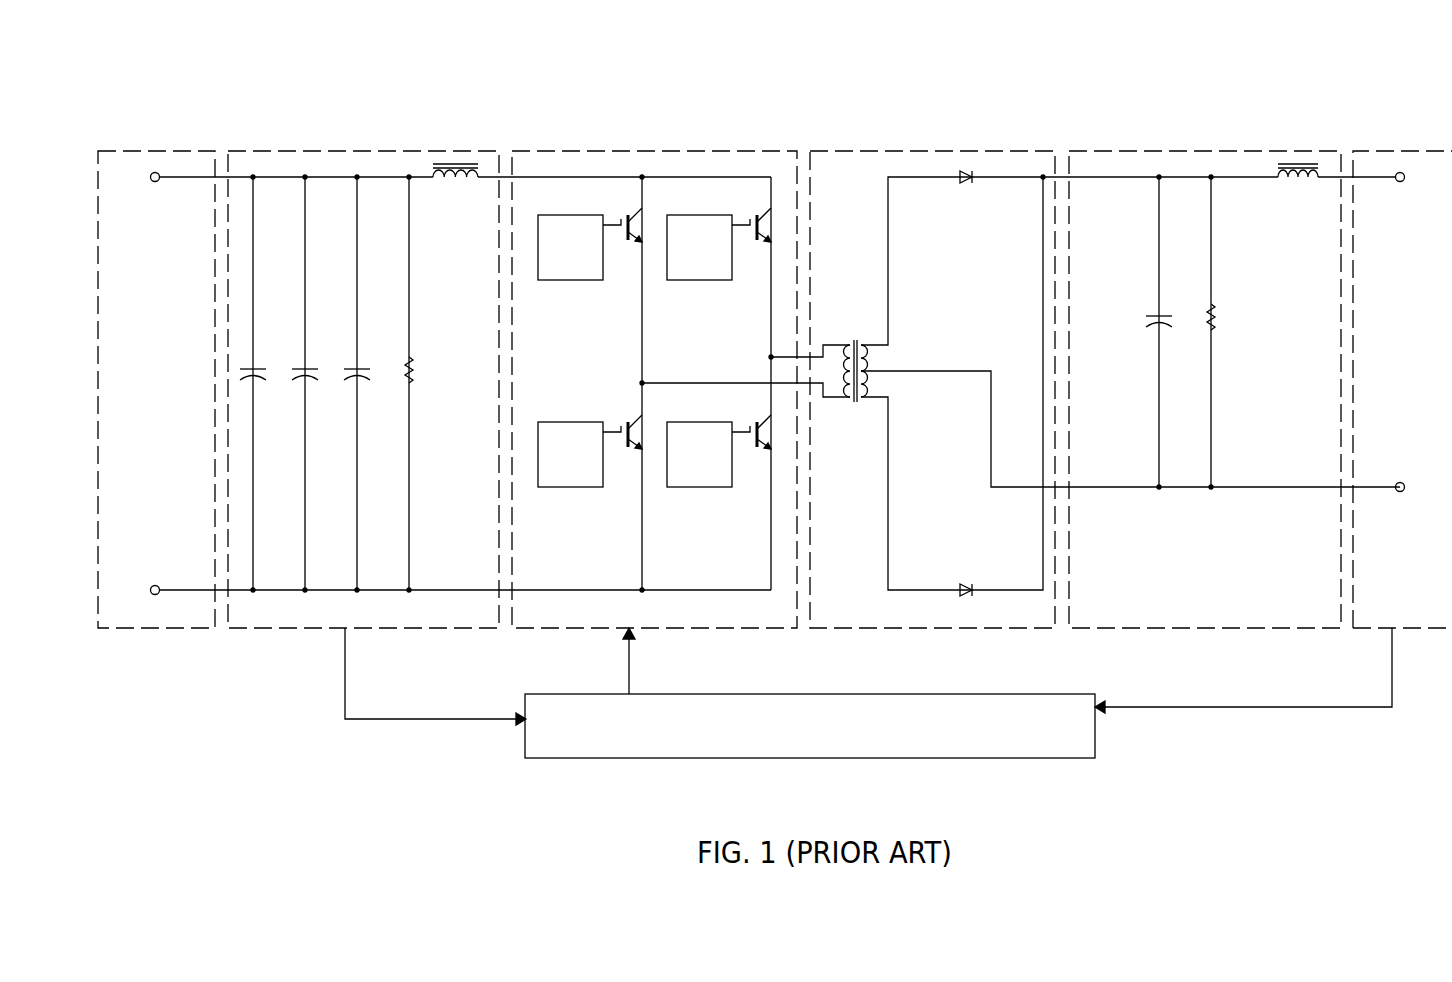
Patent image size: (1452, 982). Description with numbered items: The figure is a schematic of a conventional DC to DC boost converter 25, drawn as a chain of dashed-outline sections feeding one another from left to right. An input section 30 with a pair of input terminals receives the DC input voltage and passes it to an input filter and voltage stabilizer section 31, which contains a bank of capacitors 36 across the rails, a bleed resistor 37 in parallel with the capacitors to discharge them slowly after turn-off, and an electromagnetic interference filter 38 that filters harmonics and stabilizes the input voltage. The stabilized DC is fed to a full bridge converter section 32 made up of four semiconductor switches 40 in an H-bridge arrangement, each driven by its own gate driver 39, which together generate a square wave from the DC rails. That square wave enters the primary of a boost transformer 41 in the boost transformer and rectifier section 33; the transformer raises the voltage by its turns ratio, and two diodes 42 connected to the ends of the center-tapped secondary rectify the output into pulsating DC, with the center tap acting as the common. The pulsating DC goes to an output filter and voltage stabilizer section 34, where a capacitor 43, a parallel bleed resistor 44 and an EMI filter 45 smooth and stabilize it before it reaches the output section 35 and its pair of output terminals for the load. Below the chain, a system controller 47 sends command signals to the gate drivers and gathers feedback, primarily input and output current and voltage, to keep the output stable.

The DC to DC boost converter 25 is at (1215, 61).
The input section 30 is at (172, 148).
The input filter and voltage stabilizer section 31 is at (466, 355).
The full bridge converter section 32 is at (681, 355).
The boost transformer and rectifier section 33 is at (1105, 355).
The output filter and voltage stabilizer section 34 is at (1219, 355).
The output section 35 is at (1403, 145).
The bank of capacitors 36 is at (240, 377).
The bleed resistor 37 is at (416, 367).
The electromagnetic interference (EMI) filter 38 is at (456, 186).
The gate driver 39 is at (583, 282).
The semiconductor switch 40 is at (634, 422).
The boost transformer 41 is at (845, 343).
The diode 42 is at (973, 178).
The capacitor 43 is at (1148, 323).
The bleed resistor 44 is at (1218, 315).
The EMI filter 45 is at (1298, 158).
The system controller 47 is at (780, 694).